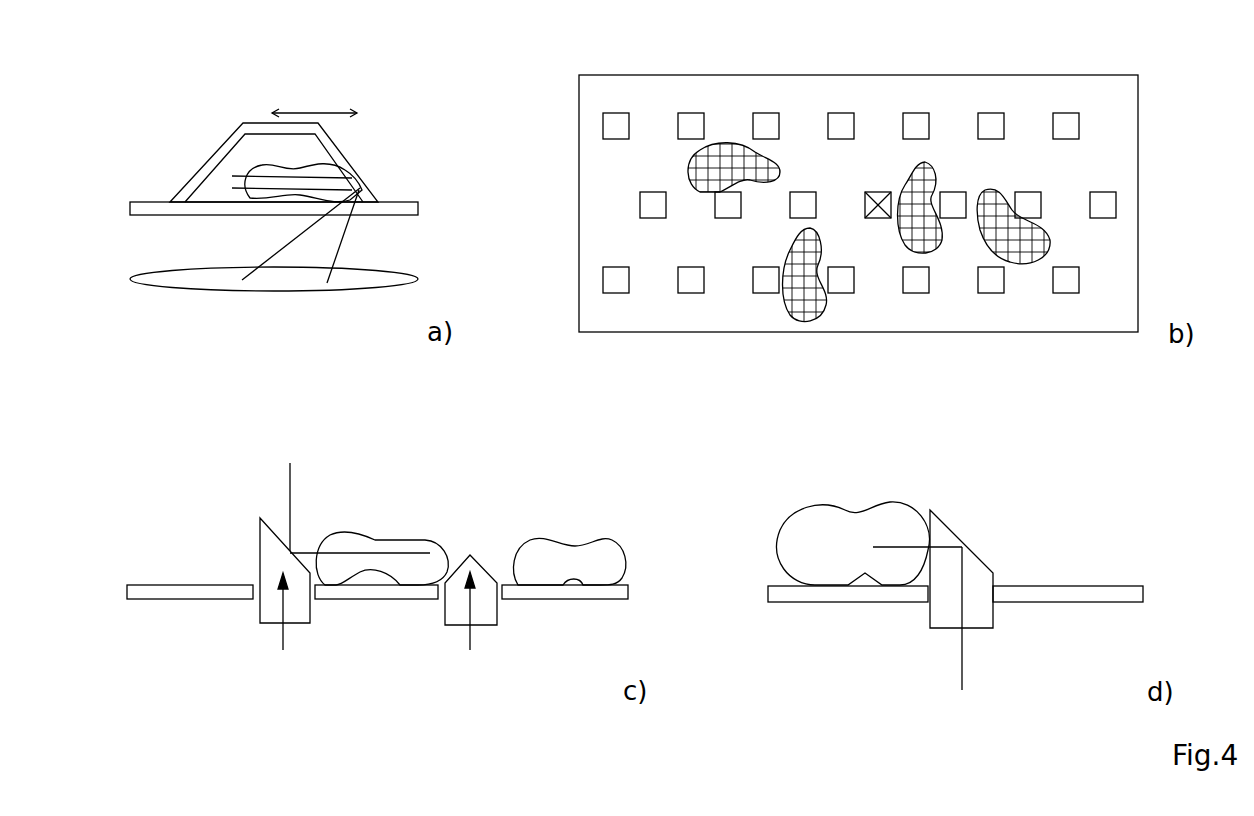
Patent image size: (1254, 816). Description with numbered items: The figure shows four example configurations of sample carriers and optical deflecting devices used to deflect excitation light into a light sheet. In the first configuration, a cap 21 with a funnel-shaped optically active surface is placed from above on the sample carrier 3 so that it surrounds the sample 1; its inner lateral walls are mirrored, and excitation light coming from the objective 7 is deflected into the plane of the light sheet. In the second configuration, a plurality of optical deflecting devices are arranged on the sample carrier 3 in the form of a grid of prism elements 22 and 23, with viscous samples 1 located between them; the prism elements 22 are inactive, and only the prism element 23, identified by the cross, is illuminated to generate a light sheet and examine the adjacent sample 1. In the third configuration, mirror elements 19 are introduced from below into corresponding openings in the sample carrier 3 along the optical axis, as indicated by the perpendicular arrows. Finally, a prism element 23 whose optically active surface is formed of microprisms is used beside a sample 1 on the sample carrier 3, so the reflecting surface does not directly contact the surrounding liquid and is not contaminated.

The sample 1 is at (325, 170).
The sample carrier 3 is at (152, 203).
The objective 7 is at (187, 280).
The mirror element 19 is at (453, 612).
The cap 21 is at (250, 121).
The prism elements 22 is at (762, 120).
The prism element 23 is at (876, 190).